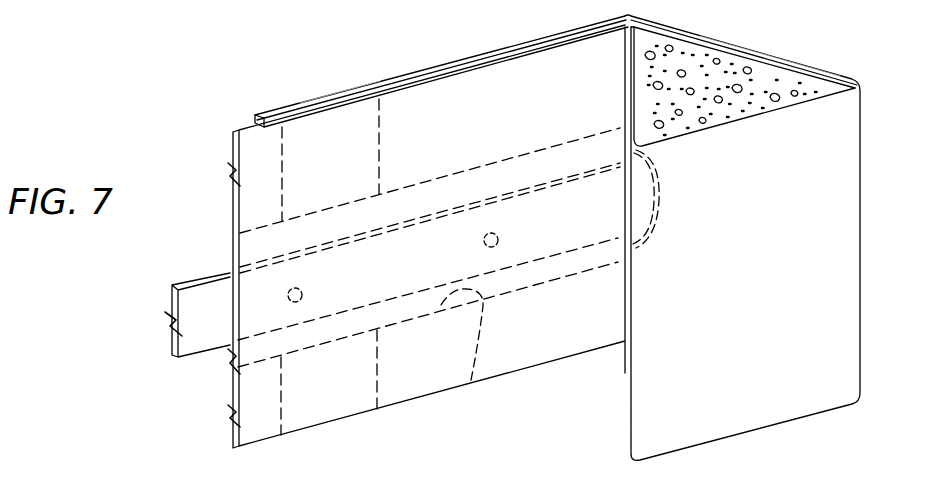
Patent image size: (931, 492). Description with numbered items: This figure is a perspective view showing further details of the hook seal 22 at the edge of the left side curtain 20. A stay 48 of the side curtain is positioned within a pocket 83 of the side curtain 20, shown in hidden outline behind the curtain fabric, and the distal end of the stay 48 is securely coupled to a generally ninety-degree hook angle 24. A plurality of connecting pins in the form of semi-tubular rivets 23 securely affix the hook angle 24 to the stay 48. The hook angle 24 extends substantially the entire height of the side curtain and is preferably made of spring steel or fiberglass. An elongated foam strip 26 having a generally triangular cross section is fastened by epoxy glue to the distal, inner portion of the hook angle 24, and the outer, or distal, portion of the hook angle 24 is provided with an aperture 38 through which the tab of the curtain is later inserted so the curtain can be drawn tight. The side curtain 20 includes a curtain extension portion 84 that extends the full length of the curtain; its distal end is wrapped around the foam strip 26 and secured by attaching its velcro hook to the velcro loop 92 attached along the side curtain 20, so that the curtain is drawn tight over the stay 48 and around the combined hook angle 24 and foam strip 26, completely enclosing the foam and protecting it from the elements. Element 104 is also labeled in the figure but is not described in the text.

The left side curtain 20 is at (467, 416).
The hook seal 22 is at (820, 62).
The semi-tubular rivets 23 is at (500, 236).
The hook angle 24 is at (428, 48).
The foam strip 26 is at (684, 54).
The aperture 38 is at (660, 197).
The stay 48 is at (203, 283).
The pocket 83 is at (472, 381).
The curtain extension portion 84 is at (762, 280).
The velcro loop 92 is at (256, 118).
The channel segment 104 is at (328, 97).